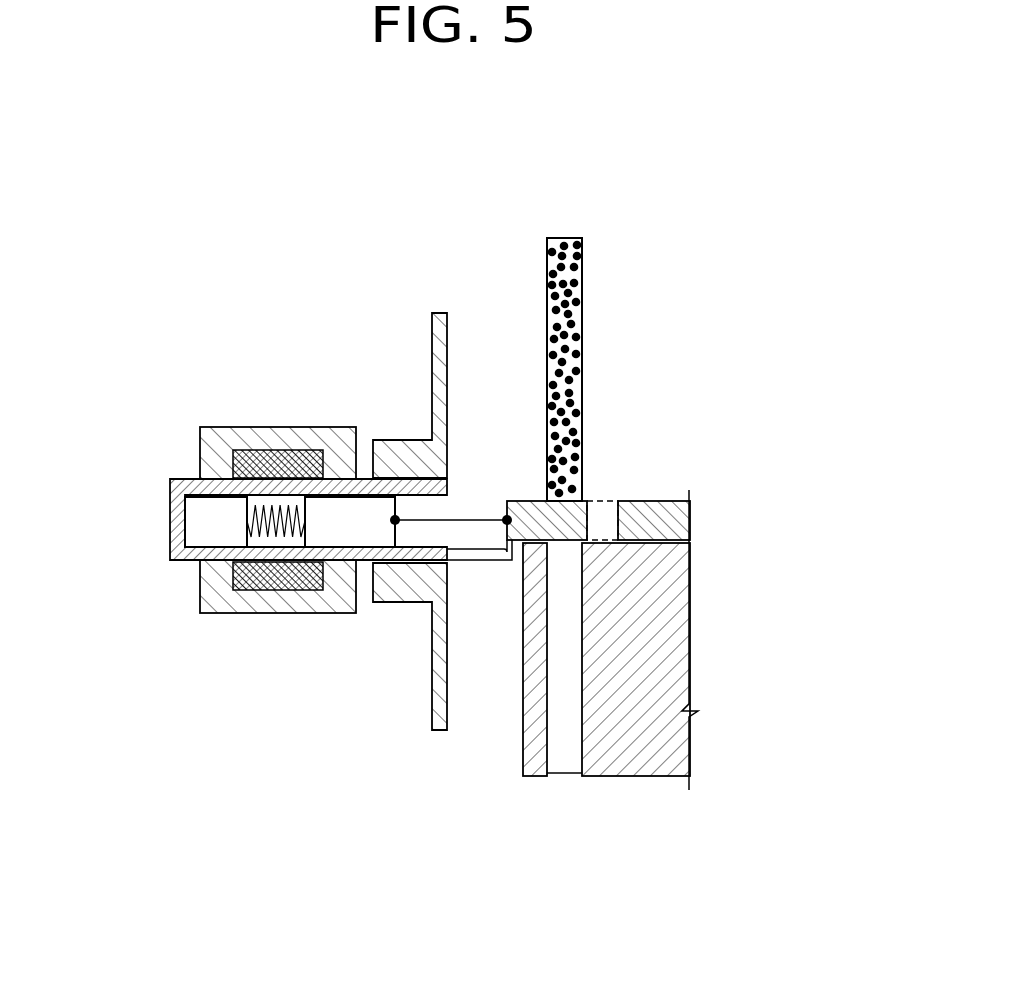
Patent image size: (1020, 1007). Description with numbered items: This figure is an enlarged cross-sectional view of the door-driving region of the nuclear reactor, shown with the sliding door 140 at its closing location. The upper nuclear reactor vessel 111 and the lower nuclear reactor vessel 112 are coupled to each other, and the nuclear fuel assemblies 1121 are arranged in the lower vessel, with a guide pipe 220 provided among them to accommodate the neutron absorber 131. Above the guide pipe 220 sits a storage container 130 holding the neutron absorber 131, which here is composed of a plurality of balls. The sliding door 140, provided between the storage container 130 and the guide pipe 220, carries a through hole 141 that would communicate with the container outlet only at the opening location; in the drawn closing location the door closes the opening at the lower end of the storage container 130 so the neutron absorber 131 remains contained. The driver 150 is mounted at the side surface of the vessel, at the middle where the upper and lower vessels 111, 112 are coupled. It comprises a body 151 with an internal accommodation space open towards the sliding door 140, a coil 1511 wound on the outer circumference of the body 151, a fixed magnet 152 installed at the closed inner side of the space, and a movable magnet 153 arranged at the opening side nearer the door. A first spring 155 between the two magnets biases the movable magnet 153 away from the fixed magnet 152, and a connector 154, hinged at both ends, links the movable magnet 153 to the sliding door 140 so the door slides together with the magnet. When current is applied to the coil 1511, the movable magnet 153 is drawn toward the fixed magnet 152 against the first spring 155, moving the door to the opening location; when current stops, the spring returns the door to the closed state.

The upper nuclear reactor vessel 111 is at (432, 338).
The lower nuclear reactor vessel 112 is at (432, 688).
The nuclear fuel assembly 1121 is at (680, 604).
The storage container 130 is at (567, 237).
The neutron absorber 131 is at (581, 270).
The sliding door 140 is at (663, 500).
The through hole 141 is at (607, 510).
The driver 150 is at (217, 408).
The body 151 is at (176, 485).
The fixed magnet 152 is at (193, 520).
The movable magnet 153 is at (342, 500).
The connector 154 is at (457, 520).
The first spring 155 is at (271, 507).
The coil 1511 is at (278, 589).
The guide pipe 220 is at (552, 737).